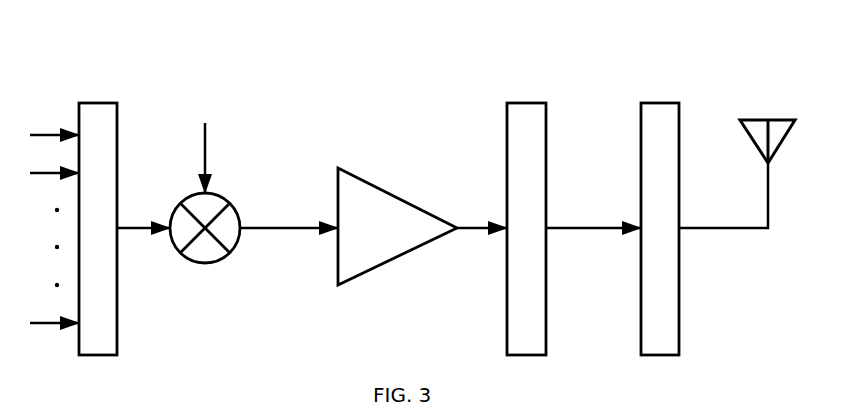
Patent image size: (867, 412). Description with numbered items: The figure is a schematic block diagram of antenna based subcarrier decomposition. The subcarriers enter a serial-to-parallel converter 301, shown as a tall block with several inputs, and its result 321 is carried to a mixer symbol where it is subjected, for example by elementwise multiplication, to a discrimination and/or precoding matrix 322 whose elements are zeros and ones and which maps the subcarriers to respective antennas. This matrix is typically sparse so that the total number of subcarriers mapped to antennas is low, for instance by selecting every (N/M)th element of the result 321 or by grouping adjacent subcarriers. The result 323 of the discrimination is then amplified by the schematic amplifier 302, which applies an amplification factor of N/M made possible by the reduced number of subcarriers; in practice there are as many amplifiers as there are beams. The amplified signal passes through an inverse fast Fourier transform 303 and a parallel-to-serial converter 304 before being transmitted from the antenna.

The serial-to-parallel converter 301 is at (95, 100).
The amplifier 302 is at (365, 175).
The inverse fast Fourier transform (IFFT) 303 is at (525, 98).
The parallel-to-serial converter 304 is at (657, 97).
The result of the serial-to-parallel converter 321 is at (135, 233).
The discrimination and/or precoding matrix 322 is at (212, 150).
The result of the discrimination 323 is at (262, 232).